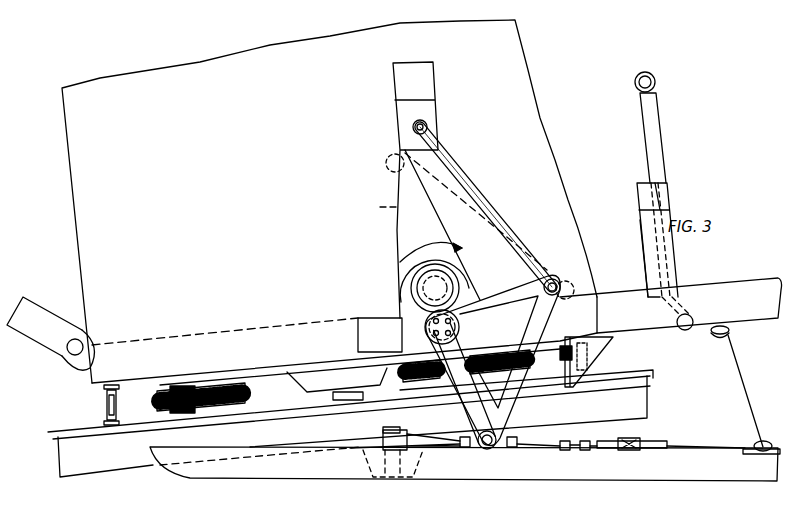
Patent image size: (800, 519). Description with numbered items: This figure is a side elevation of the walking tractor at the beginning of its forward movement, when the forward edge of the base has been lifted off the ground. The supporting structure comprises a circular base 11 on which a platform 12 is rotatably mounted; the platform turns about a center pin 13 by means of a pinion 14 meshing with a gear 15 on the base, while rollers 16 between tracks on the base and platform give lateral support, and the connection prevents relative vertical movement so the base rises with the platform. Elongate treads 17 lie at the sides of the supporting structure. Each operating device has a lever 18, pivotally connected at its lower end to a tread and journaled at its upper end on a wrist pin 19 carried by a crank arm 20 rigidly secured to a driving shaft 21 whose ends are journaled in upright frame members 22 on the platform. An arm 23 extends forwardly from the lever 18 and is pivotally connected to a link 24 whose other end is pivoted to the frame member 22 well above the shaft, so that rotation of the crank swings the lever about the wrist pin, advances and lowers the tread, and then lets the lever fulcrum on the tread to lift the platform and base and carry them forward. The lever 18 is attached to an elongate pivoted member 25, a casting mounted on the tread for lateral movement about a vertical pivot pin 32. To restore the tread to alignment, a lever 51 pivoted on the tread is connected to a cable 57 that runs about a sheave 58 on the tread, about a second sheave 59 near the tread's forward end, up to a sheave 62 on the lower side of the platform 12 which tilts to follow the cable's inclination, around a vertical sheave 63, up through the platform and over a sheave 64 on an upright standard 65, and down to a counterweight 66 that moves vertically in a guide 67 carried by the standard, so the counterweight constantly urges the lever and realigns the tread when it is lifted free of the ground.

The circular base 11 is at (140, 461).
The platform 12 is at (757, 285).
The center pin 13 is at (357, 403).
The pinion 14 is at (197, 385).
The gear 15 is at (240, 383).
The rollers 16 is at (107, 401).
The treads 17 is at (655, 466).
The lever 18 is at (470, 411).
The wrist pin 19 is at (380, 335).
The crank arm 20 is at (425, 322).
The driving shaft 21 is at (428, 285).
The upright frame member 22 is at (393, 205).
The arm 23 is at (518, 298).
The link 24 is at (483, 205).
The elongate pivoted member 25 is at (427, 441).
The vertical pivot pin 32 is at (390, 463).
The lever 51 is at (545, 455).
The cable 57 is at (640, 130).
The sheave 58 is at (663, 444).
The second sheave 59 is at (757, 457).
The sheave 62 is at (721, 339).
The vertical sheave 63 is at (689, 315).
The sheave 64 is at (652, 77).
The upright standard 65 is at (667, 165).
The counterweight 66 is at (640, 206).
The guide 67 is at (646, 258).